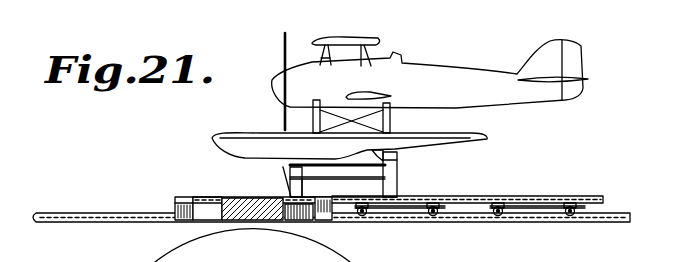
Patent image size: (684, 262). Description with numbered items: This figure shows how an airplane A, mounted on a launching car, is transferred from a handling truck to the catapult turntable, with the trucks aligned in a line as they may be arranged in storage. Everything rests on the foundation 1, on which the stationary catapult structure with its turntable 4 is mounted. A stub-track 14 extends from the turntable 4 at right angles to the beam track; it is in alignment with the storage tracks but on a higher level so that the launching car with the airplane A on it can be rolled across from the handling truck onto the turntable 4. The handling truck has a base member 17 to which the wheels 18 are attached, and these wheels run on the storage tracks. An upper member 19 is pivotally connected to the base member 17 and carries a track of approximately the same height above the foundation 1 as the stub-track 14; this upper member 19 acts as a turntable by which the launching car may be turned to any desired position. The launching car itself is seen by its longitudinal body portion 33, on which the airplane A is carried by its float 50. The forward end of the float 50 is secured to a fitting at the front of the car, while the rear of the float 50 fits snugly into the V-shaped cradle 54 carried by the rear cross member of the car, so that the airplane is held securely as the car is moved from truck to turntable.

The airplane A is at (430, 83).
The foundation 1 is at (88, 225).
The turntable 4 is at (202, 195).
The stub-track 14 is at (178, 197).
The base member 17 is at (410, 208).
The wheels 18 is at (363, 215).
The upper member 19 is at (438, 198).
The body portion 33 is at (342, 168).
The float 50 is at (233, 135).
The V-shaped cradle 54 is at (400, 160).